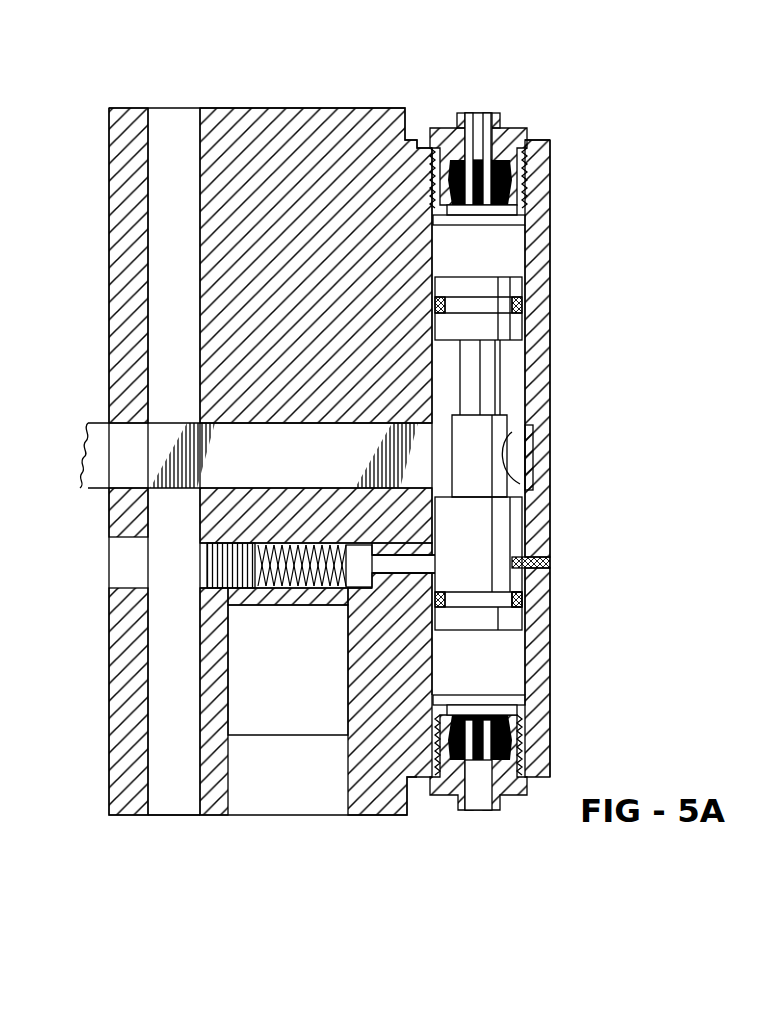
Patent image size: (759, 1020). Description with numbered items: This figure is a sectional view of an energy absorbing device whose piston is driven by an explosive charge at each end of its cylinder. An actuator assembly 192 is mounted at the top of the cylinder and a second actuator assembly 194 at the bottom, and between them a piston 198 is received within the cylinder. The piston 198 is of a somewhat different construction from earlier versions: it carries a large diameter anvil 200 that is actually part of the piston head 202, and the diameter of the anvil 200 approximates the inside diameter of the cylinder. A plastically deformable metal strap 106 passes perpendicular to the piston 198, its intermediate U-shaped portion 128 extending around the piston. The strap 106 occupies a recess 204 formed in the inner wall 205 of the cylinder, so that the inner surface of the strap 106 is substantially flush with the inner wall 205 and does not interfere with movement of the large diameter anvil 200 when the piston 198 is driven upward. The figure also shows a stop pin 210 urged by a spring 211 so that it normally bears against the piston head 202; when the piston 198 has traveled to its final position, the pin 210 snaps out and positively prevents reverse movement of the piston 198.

The strap 106 is at (92, 425).
The U-shaped portion 128 is at (528, 424).
The actuator assembly 192 is at (514, 124).
The actuator assembly 194 is at (452, 800).
The piston 198 is at (480, 634).
The large diameter anvil 200 is at (515, 535).
The piston head 202 is at (525, 604).
The recess 204 is at (528, 480).
The inner wall 205 is at (515, 258).
The stop pin 210 is at (433, 550).
The spring 211 is at (304, 590).